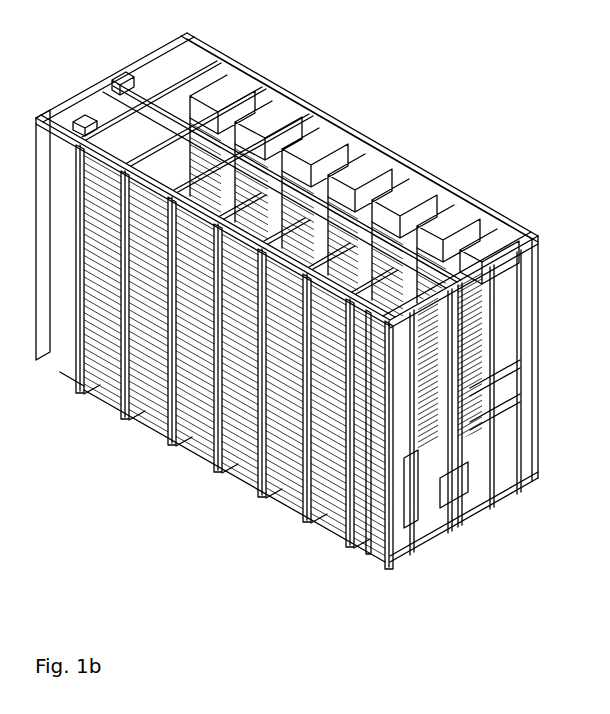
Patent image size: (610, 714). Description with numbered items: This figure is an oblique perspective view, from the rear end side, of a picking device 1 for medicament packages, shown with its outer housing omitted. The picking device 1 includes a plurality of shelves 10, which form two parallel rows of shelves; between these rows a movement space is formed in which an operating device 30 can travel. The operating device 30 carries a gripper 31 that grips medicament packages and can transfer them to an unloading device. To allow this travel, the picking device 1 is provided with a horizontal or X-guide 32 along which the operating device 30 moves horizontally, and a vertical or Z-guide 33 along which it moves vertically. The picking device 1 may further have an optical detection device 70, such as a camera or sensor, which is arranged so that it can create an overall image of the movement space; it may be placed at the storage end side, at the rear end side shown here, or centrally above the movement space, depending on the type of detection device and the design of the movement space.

The picking device 1 is at (160, 500).
The shelves 10 is at (414, 172).
The operating device 30 is at (463, 492).
The gripper 31 is at (490, 493).
The horizontal or X-guide 32 is at (414, 457).
The vertical or Z-guide 33 is at (490, 264).
The optical detection device 70 is at (113, 76).